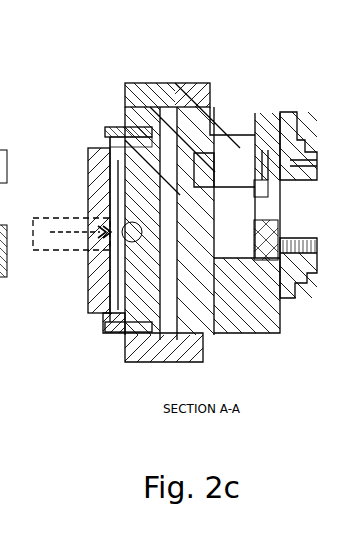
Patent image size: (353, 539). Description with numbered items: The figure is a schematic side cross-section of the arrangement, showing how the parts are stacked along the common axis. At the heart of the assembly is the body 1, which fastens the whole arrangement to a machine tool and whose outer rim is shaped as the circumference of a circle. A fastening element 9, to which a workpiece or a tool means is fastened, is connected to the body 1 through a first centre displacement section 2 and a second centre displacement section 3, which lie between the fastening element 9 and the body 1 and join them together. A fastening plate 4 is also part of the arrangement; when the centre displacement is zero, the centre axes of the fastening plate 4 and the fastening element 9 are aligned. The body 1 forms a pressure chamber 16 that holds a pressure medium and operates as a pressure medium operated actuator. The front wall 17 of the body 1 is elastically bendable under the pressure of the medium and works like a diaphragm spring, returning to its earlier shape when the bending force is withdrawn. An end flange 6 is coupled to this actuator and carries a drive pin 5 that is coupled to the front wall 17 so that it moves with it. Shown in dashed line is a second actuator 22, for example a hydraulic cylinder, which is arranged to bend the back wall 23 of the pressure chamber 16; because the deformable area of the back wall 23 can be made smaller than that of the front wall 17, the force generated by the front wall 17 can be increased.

The body 1 is at (126, 100).
The first centre displacement section 2 is at (172, 106).
The second centre displacement section 3 is at (206, 88).
The fastening plate 4 is at (95, 183).
The drive pin 5 is at (122, 256).
The end flange 6 is at (243, 330).
The fastening element 9 is at (254, 115).
The pressure chamber 16 is at (150, 183).
The front wall 17 is at (150, 183).
The second actuator 22 is at (47, 246).
The back wall 23 is at (118, 222).